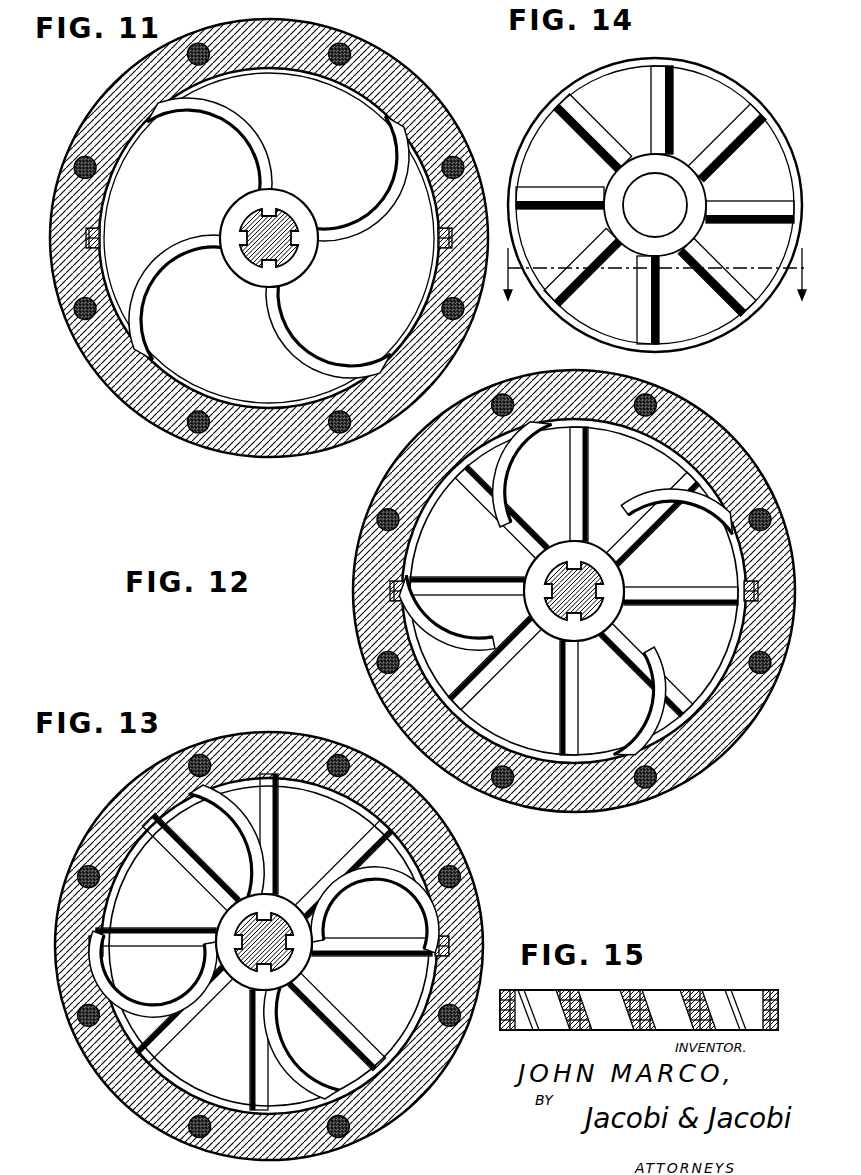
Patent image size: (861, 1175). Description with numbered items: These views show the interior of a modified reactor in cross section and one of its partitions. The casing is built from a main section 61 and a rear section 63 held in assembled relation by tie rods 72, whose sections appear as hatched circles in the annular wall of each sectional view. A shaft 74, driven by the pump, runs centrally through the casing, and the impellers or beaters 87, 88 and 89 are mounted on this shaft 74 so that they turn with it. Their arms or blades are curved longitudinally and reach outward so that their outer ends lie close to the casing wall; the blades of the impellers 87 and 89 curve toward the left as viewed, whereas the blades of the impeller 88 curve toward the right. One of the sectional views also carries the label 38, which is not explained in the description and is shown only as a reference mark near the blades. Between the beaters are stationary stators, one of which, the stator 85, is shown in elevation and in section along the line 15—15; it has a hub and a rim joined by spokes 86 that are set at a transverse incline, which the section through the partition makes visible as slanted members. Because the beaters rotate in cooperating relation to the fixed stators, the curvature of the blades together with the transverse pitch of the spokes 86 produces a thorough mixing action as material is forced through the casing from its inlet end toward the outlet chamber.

In FIG. 11, the main section 61 is at (269, 238).
In FIG. 14, the main section 61 is at (554, 344).
In FIG. 12, the main section 61 is at (574, 575).
In FIG. 13, the main section 61 is at (269, 946).
In FIG. 11, the rear section 63 is at (293, 238).
In FIG. 12, the rear section 63 is at (753, 700).
In FIG. 13, the rear section 63 is at (304, 748).
In FIG. 11, the tie rods 72 is at (269, 238).
In FIG. 12, the tie rods 72 is at (587, 602).
In FIG. 13, the tie rods 72 is at (237, 946).
In FIG. 11, the shaft 74 is at (261, 247).
In FIG. 12, the shaft 74 is at (544, 591).
In FIG. 13, the shaft 74 is at (268, 927).
In FIG. 11, the impeller 89 is at (269, 238).
In FIG. 12, the impeller 89 is at (593, 482).
In FIG. 13, the impeller 89 is at (363, 960).
In FIG. 12, the impeller 88 is at (565, 588).
In FIG. 13, the impeller 88 is at (264, 942).
In FIG. 12, the shaft opening 38 is at (610, 515).
In FIG. 14, the stator 85 is at (655, 198).
In FIG. 12, the stator 85 is at (574, 591).
In FIG. 13, the stator 85 is at (240, 943).
In FIG. 15, the stator 85 is at (714, 988).
In FIG. 14, the spokes 86 is at (654, 194).
In FIG. 12, the spokes 86 is at (574, 591).
In FIG. 13, the spokes 86 is at (264, 942).
In FIG. 15, the spokes 86 is at (675, 1022).
In FIG. 14, the impeller 87 is at (655, 205).
In FIG. 13, the impeller 87 is at (230, 942).
In FIG. 14, the section line 15- 15 is at (649, 290).